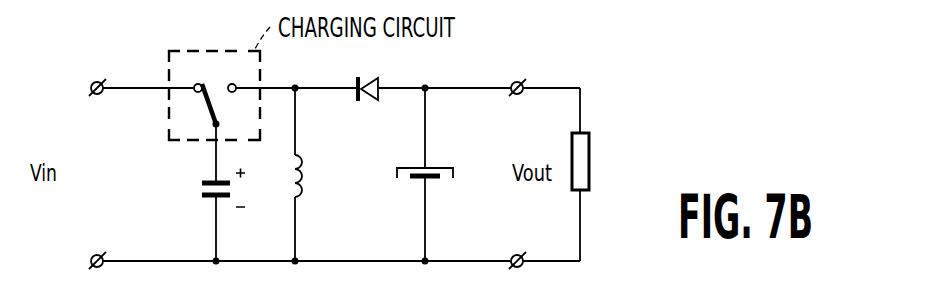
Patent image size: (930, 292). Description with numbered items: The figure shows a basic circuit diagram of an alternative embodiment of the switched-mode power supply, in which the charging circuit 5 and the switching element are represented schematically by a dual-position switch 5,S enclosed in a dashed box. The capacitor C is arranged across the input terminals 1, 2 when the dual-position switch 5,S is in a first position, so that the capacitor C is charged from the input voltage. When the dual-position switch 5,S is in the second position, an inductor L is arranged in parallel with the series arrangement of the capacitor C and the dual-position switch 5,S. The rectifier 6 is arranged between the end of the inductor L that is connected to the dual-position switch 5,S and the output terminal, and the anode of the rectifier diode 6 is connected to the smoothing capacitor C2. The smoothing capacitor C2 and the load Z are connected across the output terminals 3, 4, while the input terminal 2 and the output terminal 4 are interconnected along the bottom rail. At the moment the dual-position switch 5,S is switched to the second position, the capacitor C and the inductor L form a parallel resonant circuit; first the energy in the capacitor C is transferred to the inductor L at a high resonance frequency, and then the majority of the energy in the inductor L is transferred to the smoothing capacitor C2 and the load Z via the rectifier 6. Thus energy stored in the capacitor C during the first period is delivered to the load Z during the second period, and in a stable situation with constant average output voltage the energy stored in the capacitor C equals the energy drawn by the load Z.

The input terminal 1 is at (91, 86).
The input terminal 2 is at (91, 259).
The output terminal 3 is at (517, 96).
The output terminal 4 is at (517, 253).
The charging circuit 5 is at (168, 63).
The rectifier 6 is at (381, 83).
The capacitor C is at (214, 192).
The inductor L is at (309, 174).
The smoothing capacitor C2 is at (415, 180).
The load Z is at (593, 161).